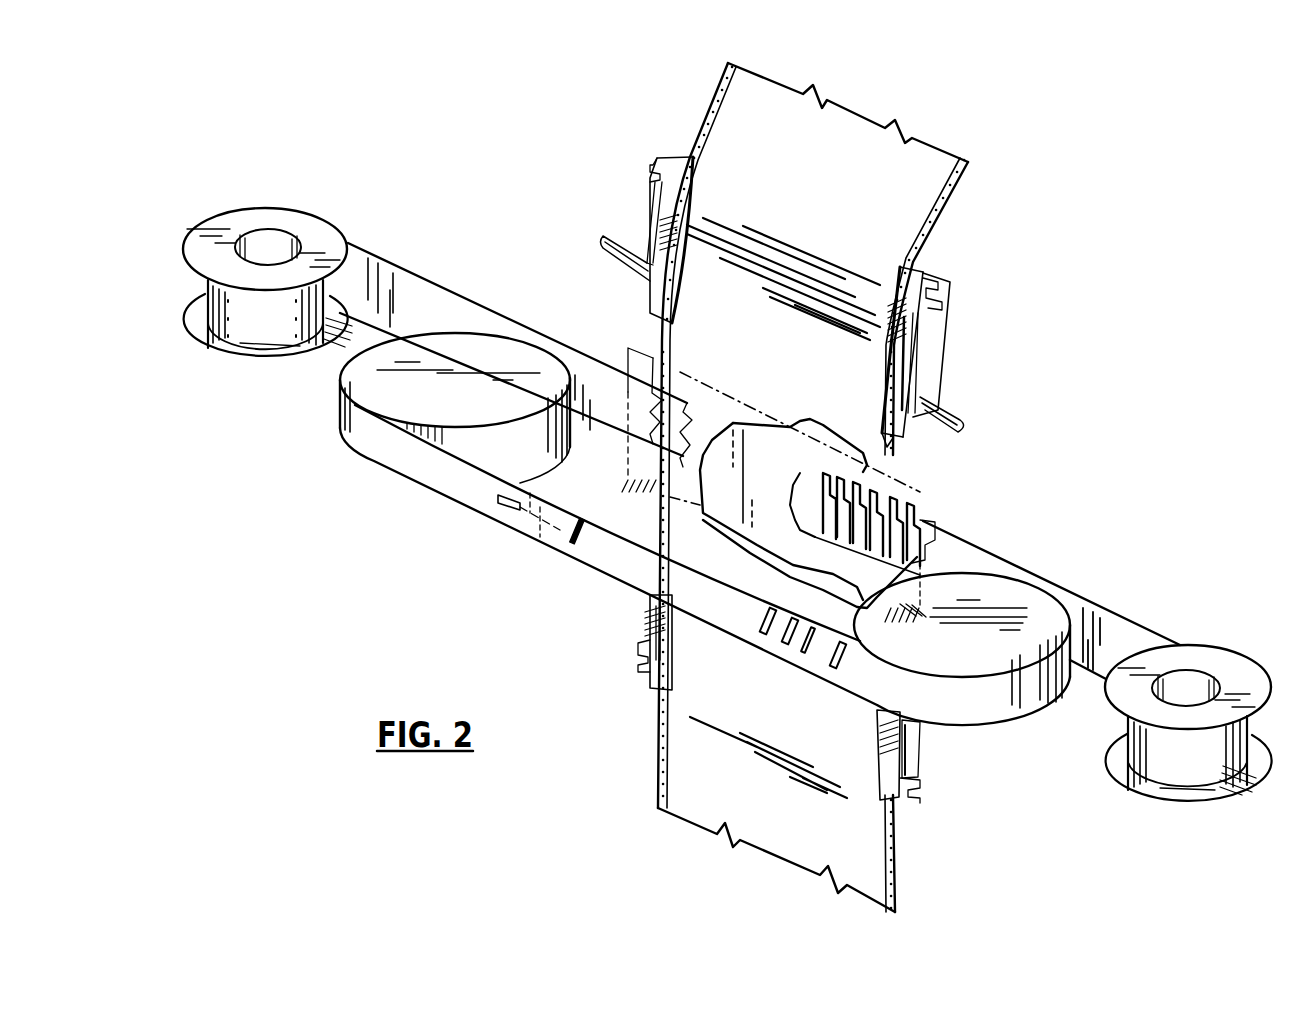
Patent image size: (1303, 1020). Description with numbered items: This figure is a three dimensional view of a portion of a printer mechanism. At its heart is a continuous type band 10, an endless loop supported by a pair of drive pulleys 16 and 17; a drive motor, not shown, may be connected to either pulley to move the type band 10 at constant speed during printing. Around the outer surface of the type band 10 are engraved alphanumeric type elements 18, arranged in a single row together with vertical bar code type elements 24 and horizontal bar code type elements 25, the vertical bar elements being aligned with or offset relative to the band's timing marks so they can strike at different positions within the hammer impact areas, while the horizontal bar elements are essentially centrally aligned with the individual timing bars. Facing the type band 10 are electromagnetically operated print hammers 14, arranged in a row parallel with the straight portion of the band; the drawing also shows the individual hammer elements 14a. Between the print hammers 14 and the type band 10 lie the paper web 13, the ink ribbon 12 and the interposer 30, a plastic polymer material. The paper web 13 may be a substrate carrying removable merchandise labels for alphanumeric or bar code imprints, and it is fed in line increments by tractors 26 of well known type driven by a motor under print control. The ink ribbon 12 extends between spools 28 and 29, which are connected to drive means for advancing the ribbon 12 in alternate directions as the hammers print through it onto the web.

The continuous type band 10 is at (447, 488).
The ink ribbon 12 is at (437, 297).
The paper web 13 is at (913, 193).
The print hammers 14 is at (913, 520).
The hammer elements 14a is at (897, 500).
The drive pulley 16 is at (1033, 618).
The drive pulley 17 is at (360, 373).
The alphanumeric type elements 18 is at (603, 550).
The vertical bar code type elements 24 is at (570, 537).
The horizontal bar code type elements 25 is at (500, 502).
The tractors 26 is at (677, 167).
The spool 28 is at (1208, 653).
The spool 29 is at (323, 233).
The interposer 30 is at (713, 387).